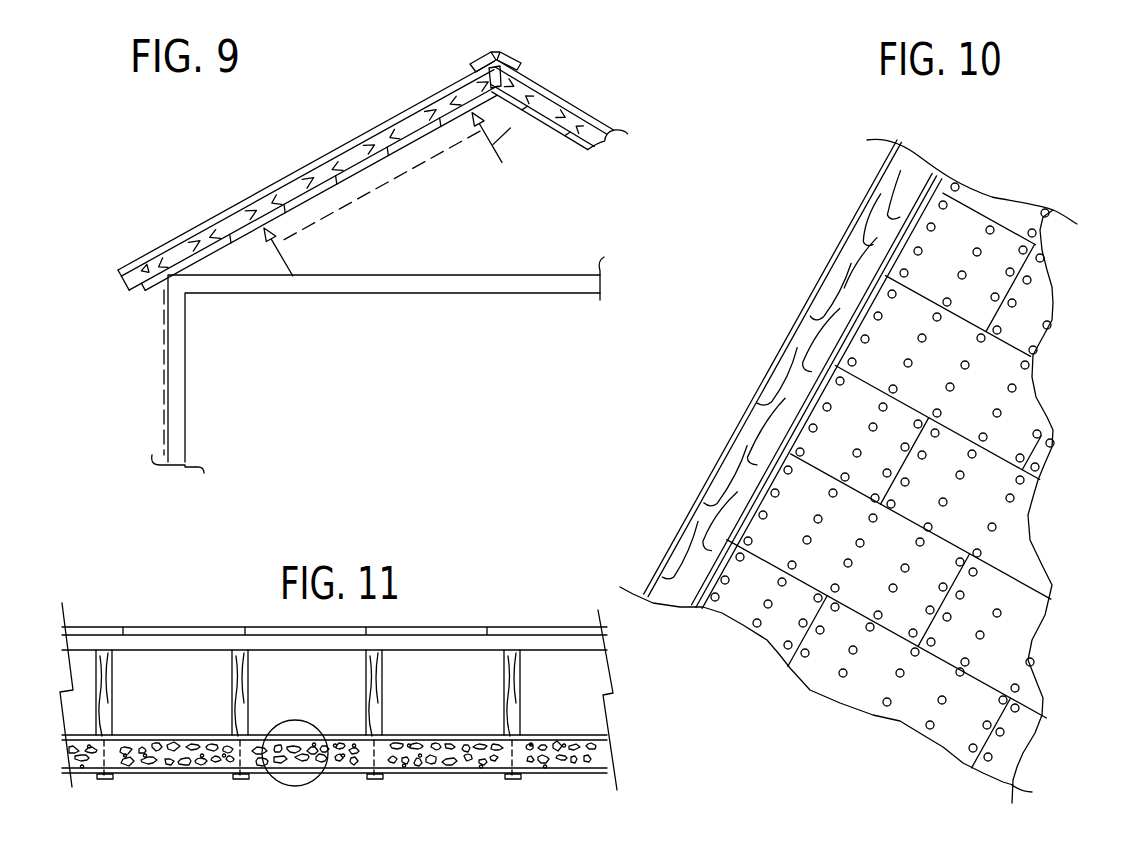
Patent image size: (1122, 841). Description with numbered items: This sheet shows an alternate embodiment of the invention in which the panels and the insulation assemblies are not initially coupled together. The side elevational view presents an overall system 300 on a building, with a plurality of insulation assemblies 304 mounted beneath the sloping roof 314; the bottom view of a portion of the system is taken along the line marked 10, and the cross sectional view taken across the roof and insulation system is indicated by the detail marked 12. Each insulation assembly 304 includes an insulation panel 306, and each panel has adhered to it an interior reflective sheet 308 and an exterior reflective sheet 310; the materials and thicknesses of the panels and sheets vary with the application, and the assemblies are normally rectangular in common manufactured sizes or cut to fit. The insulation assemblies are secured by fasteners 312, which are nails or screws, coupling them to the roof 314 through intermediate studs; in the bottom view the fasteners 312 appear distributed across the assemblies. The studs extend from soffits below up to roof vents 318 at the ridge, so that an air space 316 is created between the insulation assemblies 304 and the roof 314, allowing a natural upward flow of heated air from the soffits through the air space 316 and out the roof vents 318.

In FIG. 9, the overall system 300 is at (203, 170).
In FIG. 9, the insulation assembly 304 is at (373, 166).
In FIG. 11, the insulation assembly 304 is at (218, 574).
In FIG. 11, the insulation panel 306 is at (600, 760).
In FIG. 11, the interior reflective sheet 308 is at (577, 736).
In FIG. 11, the exterior reflective sheet 310 is at (407, 774).
In FIG. 10, the fasteners 312 is at (796, 451).
In FIG. 11, the fasteners 312 is at (233, 778).
In FIG. 9, the roof 314 is at (350, 146).
In FIG. 10, the roof 314 is at (797, 313).
In FIG. 11, the roof 314 is at (193, 625).
In FIG. 9, the air space 316 is at (145, 288).
In FIG. 11, the air space 316 is at (578, 670).
In FIG. 9, the roof vents 318 is at (524, 39).
In FIG. 9, the section line 10- 10 is at (391, 190).
In FIG. 11, the detail circle 12 is at (312, 723).